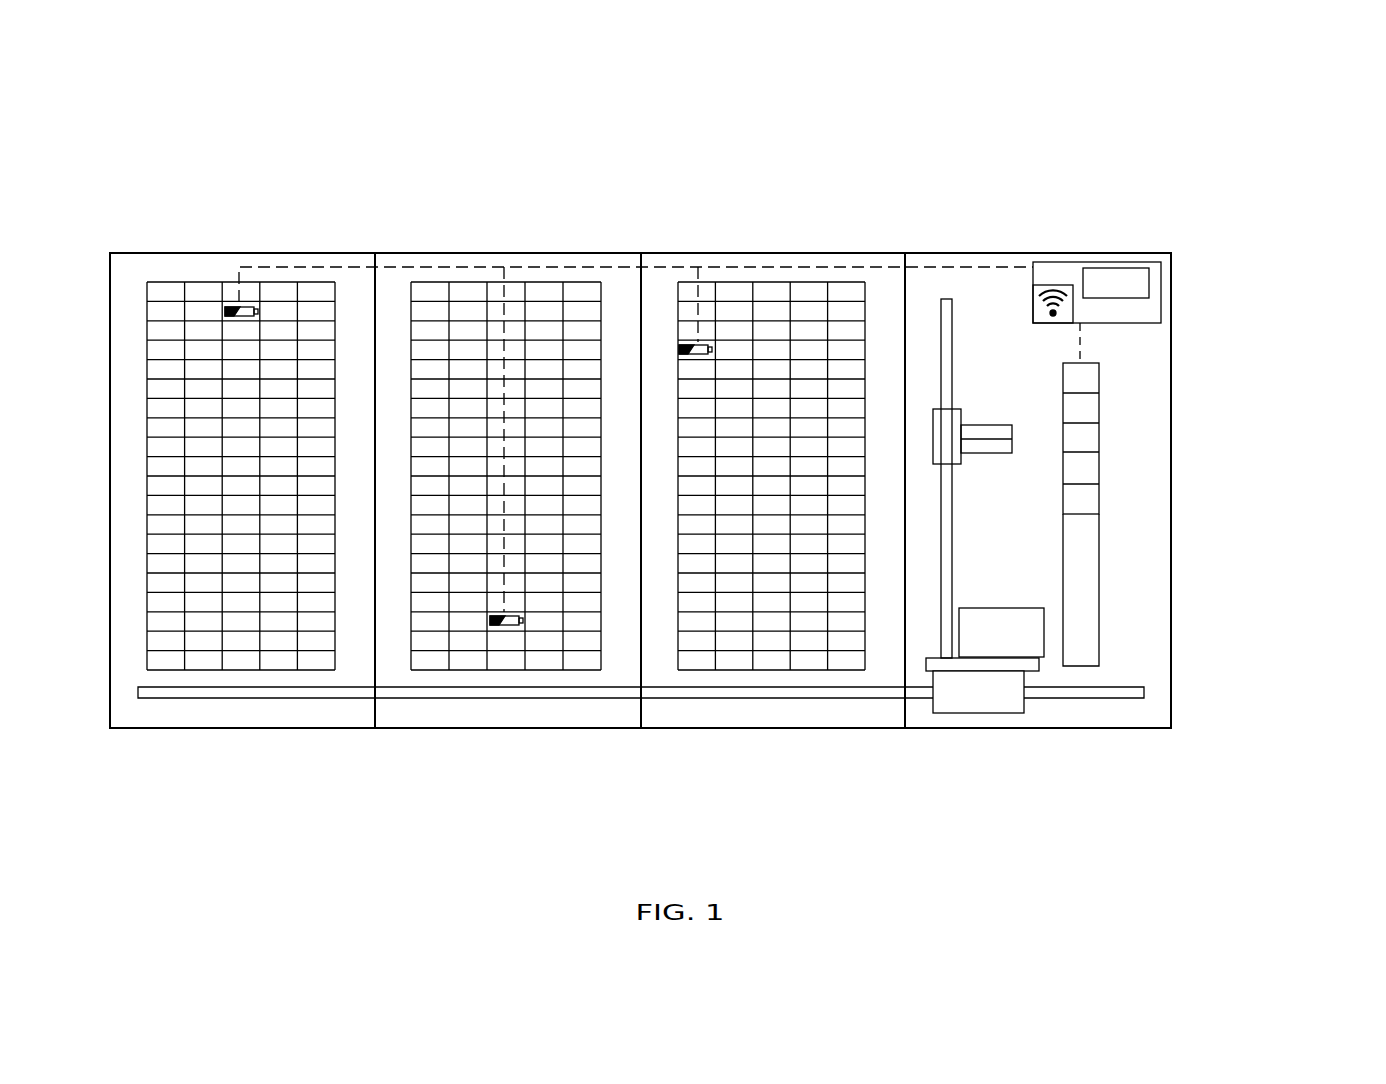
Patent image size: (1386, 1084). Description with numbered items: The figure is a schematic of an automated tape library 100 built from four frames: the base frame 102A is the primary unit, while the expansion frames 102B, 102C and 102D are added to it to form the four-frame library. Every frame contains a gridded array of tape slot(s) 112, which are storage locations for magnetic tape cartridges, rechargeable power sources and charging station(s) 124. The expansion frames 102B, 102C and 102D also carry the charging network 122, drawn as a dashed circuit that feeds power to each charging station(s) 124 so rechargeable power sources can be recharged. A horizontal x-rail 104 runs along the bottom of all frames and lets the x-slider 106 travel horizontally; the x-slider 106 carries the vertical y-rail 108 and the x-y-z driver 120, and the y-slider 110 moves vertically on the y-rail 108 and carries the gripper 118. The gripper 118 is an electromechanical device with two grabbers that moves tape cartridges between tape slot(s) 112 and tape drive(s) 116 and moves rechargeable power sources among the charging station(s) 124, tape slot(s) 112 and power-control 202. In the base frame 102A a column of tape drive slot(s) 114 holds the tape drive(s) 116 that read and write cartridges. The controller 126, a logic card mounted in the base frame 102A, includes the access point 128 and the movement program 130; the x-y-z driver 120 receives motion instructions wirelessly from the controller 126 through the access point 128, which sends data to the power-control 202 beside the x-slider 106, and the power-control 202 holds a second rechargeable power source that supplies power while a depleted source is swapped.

The automated tape library 100 is at (240, 133).
The frame 1 102A is at (946, 253).
The frame 2 102B is at (768, 253).
The frame 3 102C is at (514, 728).
The frame 4 102D is at (239, 555).
The x-rail 104 is at (397, 698).
The x-slider 106 is at (1015, 713).
The y-rail 108 is at (952, 558).
The y-slider 110 is at (933, 437).
The tape slot(s) 112 is at (165, 670).
The tape drive slot(s) 114 is at (1099, 645).
The tape drive(s) 116 is at (1099, 497).
The gripper 118 is at (1012, 425).
The x-y-z driver 120 is at (953, 671).
The charging network 122 is at (350, 266).
The charging station(s) 124 is at (243, 316).
The controller 126 is at (1161, 306).
The access point 128 is at (1033, 308).
The movement program 130 is at (1122, 268).
The power-control 202 is at (1044, 633).